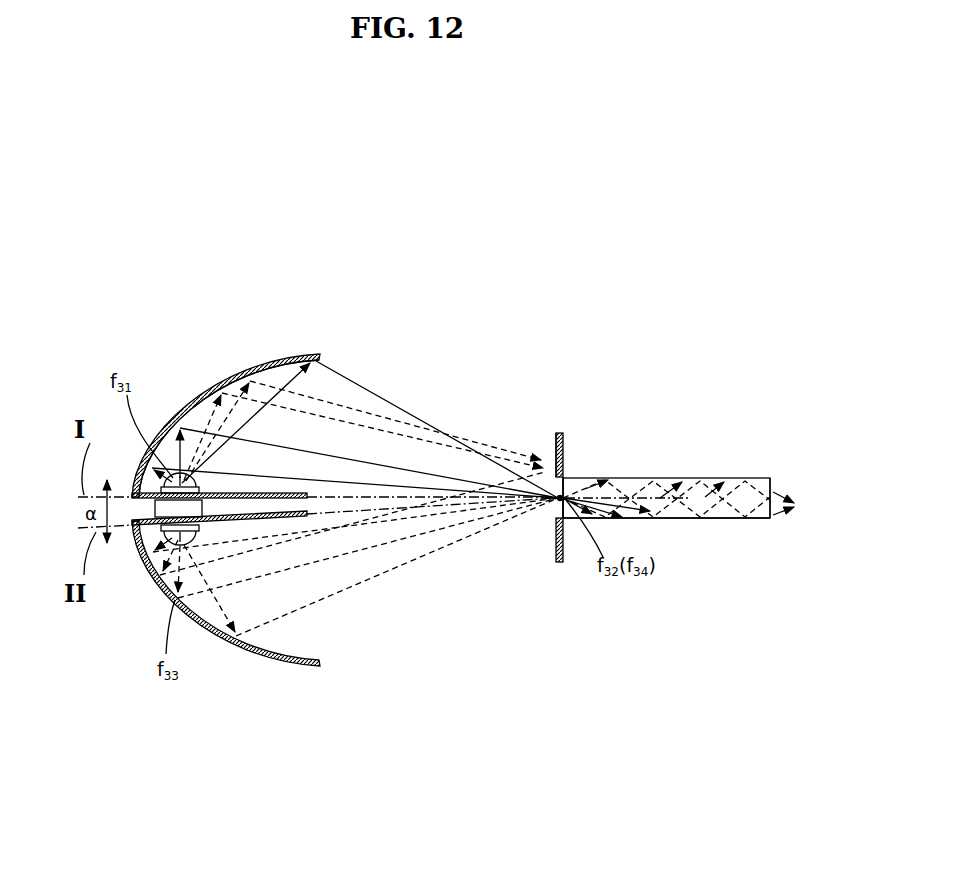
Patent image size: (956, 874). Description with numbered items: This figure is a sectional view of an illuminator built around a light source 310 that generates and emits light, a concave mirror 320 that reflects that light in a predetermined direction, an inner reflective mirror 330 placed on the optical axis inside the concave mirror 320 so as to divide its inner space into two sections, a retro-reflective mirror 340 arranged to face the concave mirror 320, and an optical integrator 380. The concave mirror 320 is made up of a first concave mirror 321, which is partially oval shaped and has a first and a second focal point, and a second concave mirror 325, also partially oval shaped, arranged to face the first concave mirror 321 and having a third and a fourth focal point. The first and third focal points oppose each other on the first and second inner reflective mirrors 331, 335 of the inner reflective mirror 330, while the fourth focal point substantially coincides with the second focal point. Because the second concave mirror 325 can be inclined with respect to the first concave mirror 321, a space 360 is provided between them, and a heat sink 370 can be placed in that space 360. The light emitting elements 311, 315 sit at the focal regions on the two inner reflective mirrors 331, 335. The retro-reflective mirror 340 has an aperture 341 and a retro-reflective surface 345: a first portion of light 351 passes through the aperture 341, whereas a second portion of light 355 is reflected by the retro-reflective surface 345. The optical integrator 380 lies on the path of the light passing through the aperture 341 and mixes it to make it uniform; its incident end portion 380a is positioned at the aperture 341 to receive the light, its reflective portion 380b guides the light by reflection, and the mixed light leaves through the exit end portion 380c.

The light source 310 is at (148, 490).
The first light emitting element 311 is at (180, 473).
The second light source 315 is at (190, 538).
The concave mirror 320 is at (302, 313).
The first concave mirror 321 is at (247, 367).
The second concave mirror 325 is at (268, 661).
The inner reflective mirror 330 is at (260, 509).
The first inner reflective mirror 331 is at (305, 499).
The second inner reflective mirror 335 is at (282, 522).
The retro-reflective mirror 340 is at (578, 568).
The aperture 341 is at (566, 478).
The retro-reflective surface 345 is at (561, 433).
The first portion of light 351 is at (387, 395).
The second portion of light 355 is at (410, 427).
The space 360 is at (135, 525).
The heat sink 370 is at (150, 503).
The optical integrator 380 is at (700, 540).
The incident end portion 380a is at (563, 519).
The reflective portion 380b is at (722, 518).
The exit end portion 380c is at (771, 478).